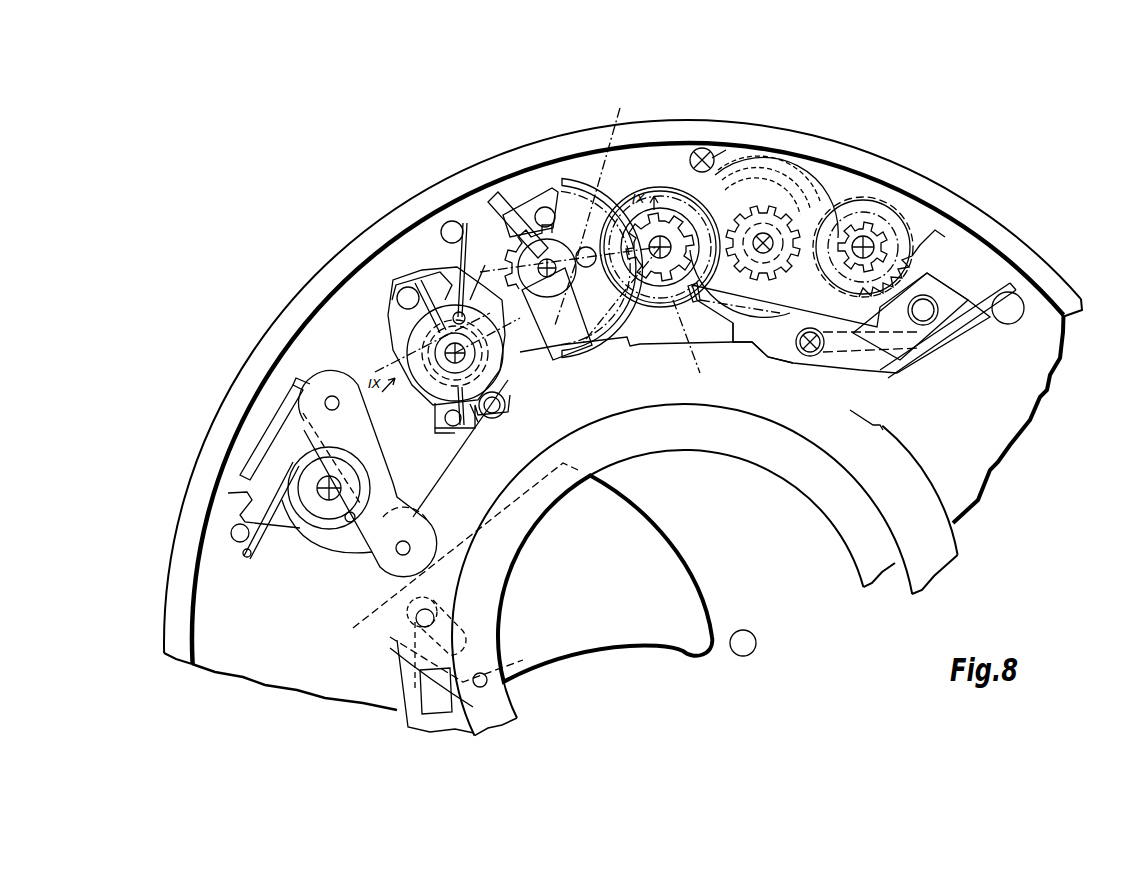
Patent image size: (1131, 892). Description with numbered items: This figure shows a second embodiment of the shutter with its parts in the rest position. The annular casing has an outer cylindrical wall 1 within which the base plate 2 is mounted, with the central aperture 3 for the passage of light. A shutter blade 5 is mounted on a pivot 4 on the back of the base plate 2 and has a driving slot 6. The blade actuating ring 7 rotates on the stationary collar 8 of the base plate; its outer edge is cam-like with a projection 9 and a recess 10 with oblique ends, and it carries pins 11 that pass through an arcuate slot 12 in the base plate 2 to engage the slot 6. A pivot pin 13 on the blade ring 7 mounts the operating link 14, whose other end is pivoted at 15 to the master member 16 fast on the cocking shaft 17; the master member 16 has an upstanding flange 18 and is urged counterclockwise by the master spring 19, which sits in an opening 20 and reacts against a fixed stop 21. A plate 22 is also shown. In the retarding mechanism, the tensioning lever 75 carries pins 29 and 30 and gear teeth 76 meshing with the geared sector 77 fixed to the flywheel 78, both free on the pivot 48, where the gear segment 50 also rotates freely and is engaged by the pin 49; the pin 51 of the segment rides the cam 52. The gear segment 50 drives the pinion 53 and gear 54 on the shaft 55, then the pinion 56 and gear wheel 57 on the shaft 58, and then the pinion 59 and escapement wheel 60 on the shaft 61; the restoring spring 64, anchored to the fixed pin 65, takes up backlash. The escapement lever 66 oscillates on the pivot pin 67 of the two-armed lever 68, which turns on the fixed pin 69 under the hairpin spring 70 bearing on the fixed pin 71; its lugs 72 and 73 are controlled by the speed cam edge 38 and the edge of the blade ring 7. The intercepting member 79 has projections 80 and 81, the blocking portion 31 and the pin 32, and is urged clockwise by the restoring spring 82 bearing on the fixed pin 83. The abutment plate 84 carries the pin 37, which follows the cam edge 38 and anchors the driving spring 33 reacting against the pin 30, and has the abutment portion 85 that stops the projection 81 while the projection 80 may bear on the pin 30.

The outer cylindrical wall 1 is at (178, 584).
The base plate 2 is at (250, 667).
The central aperture 3 is at (743, 643).
The pivots 4 is at (488, 680).
The shutter blade 5 is at (663, 637).
The driving slot 6 is at (453, 647).
The blade actuating ring 7 is at (913, 563).
The stationary collar 8 is at (853, 537).
The projection 9 is at (640, 348).
The recess 10 is at (850, 411).
The pins 11 is at (403, 637).
The arcuate slot 12 is at (470, 665).
The pivot pin 13 is at (400, 556).
The operating link 14 is at (385, 545).
The pivot 15 is at (328, 398).
The master member 16 is at (244, 502).
The cocking shaft 17 is at (320, 502).
The upstanding flange 18 is at (262, 437).
The master spring 19 is at (248, 558).
The opening 20 is at (346, 522).
The fixed stop 21 is at (237, 541).
The hub 22 is at (446, 352).
The pin 29 is at (496, 414).
The pin 30 is at (405, 308).
The intercepting portion 31 is at (455, 428).
The pin 32 is at (448, 421).
The main driving spring 33 is at (430, 300).
The pin 37 is at (450, 292).
The shutter speed cam edge 38 is at (693, 346).
The pivot 48 is at (560, 290).
The pin 49 is at (545, 207).
The gear segment 50 is at (566, 178).
The pin 51 is at (586, 245).
The cam 52 is at (595, 206).
The pinion 53 is at (660, 236).
The gear 54 is at (674, 180).
The shaft 55 is at (660, 262).
The pinion 56 is at (850, 237).
The gear wheel 57 is at (790, 172).
The shaft 58 is at (778, 238).
The pinion 59 is at (880, 240).
The escapement wheel 60 is at (938, 233).
The shaft 61 is at (903, 262).
The restoring spring 64 is at (714, 172).
The fixed pin 65 is at (708, 150).
The escapement lever 66 is at (967, 258).
The pivot pin 67 is at (938, 305).
The two-armed lever 68 is at (838, 365).
The fixed pin 69 is at (810, 356).
The hairpin spring 70 is at (965, 330).
The fixed pin 71 is at (1024, 303).
The lug 72 is at (695, 301).
The lug 73 is at (752, 343).
The tensioning lever 75 is at (478, 428).
The gear teeth 76 is at (478, 262).
The geared sector 77 is at (500, 195).
The flywheel 78 is at (540, 197).
The intercepting member 79 is at (504, 411).
The projection 80 is at (397, 298).
The projection 81 is at (465, 222).
The restoring spring 82 is at (470, 285).
The fixed pin 83 is at (447, 223).
The supporting abutment plate 84 is at (443, 392).
The abutment portion 85 is at (530, 342).